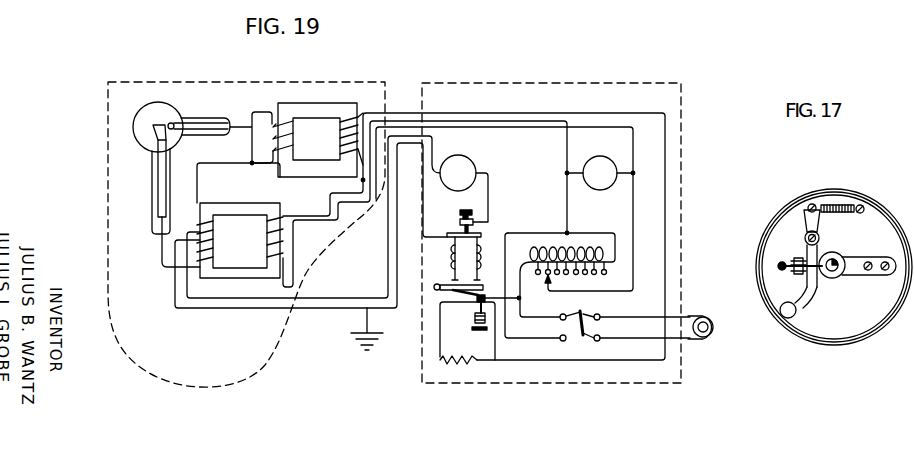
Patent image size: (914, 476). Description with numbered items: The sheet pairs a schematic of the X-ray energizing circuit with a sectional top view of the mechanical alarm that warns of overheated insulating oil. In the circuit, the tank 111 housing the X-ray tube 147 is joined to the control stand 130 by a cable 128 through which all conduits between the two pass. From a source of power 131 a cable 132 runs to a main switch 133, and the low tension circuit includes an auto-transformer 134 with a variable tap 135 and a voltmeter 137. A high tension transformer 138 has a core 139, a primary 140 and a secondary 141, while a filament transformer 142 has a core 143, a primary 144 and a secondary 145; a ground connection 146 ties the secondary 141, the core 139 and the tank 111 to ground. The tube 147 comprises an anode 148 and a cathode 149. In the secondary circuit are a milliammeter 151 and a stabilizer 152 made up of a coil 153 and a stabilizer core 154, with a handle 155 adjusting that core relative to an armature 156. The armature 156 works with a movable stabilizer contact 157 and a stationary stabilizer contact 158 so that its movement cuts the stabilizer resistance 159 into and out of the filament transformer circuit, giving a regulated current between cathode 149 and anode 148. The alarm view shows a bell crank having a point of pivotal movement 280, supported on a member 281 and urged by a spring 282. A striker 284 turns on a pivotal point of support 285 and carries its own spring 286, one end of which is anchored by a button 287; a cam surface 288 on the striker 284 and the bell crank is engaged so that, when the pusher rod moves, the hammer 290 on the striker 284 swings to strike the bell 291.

In FIG. 19, the tank 111 is at (131, 82).
In FIG. 19, the cable 128 is at (413, 146).
In FIG. 19, the control stand 130 is at (645, 383).
In FIG. 19, the source of power 131 is at (706, 337).
In FIG. 19, the cable 132 is at (677, 330).
In FIG. 19, the main switch 133 is at (573, 342).
In FIG. 19, the auto-transformer 134 is at (572, 240).
In FIG. 19, the variable tap 135 is at (599, 291).
In FIG. 19, the voltmeter 137 is at (583, 168).
In FIG. 19, the high tension transformer 138 is at (236, 280).
In FIG. 19, the core 139 is at (242, 212).
In FIG. 19, the primary 140 is at (283, 248).
In FIG. 19, the secondary 141 is at (222, 228).
In FIG. 19, the filament transformer 142 is at (307, 105).
In FIG. 19, the core 143 is at (340, 105).
In FIG. 19, the primary 144 is at (362, 118).
In FIG. 19, the secondary 145 is at (273, 122).
In FIG. 19, the ground connection 146 is at (200, 231).
In FIG. 19, the X-ray tube 147 is at (135, 128).
In FIG. 19, the anode 148 is at (156, 221).
In FIG. 19, the cathode 149 is at (172, 122).
In FIG. 19, the milliammeter 151 is at (470, 165).
In FIG. 19, the stabilizer 152 is at (475, 222).
In FIG. 19, the coil 153 is at (448, 256).
In FIG. 19, the stabilizer core 154 is at (447, 235).
In FIG. 19, the handle 155 is at (461, 212).
In FIG. 19, the armature 156 is at (435, 286).
In FIG. 19, the movable stabilizer contact 157 is at (477, 300).
In FIG. 19, the stationary stabilizer contact 158 is at (493, 308).
In FIG. 19, the stabilizer resistance 159 is at (452, 368).
In FIG. 17, the point of pivotal movement 280 is at (795, 273).
In FIG. 17, the member 281 is at (780, 263).
In FIG. 17, the spring 282 is at (780, 267).
In FIG. 17, the striker 284 is at (811, 288).
In FIG. 17, the pivotal point of support 285 is at (818, 238).
In FIG. 17, the spring 286 is at (836, 206).
In FIG. 17, the button 287 is at (864, 208).
In FIG. 17, the cam surface 288 is at (800, 257).
In FIG. 17, the hammer 290 is at (781, 308).
In FIG. 17, the bell 291 is at (827, 343).